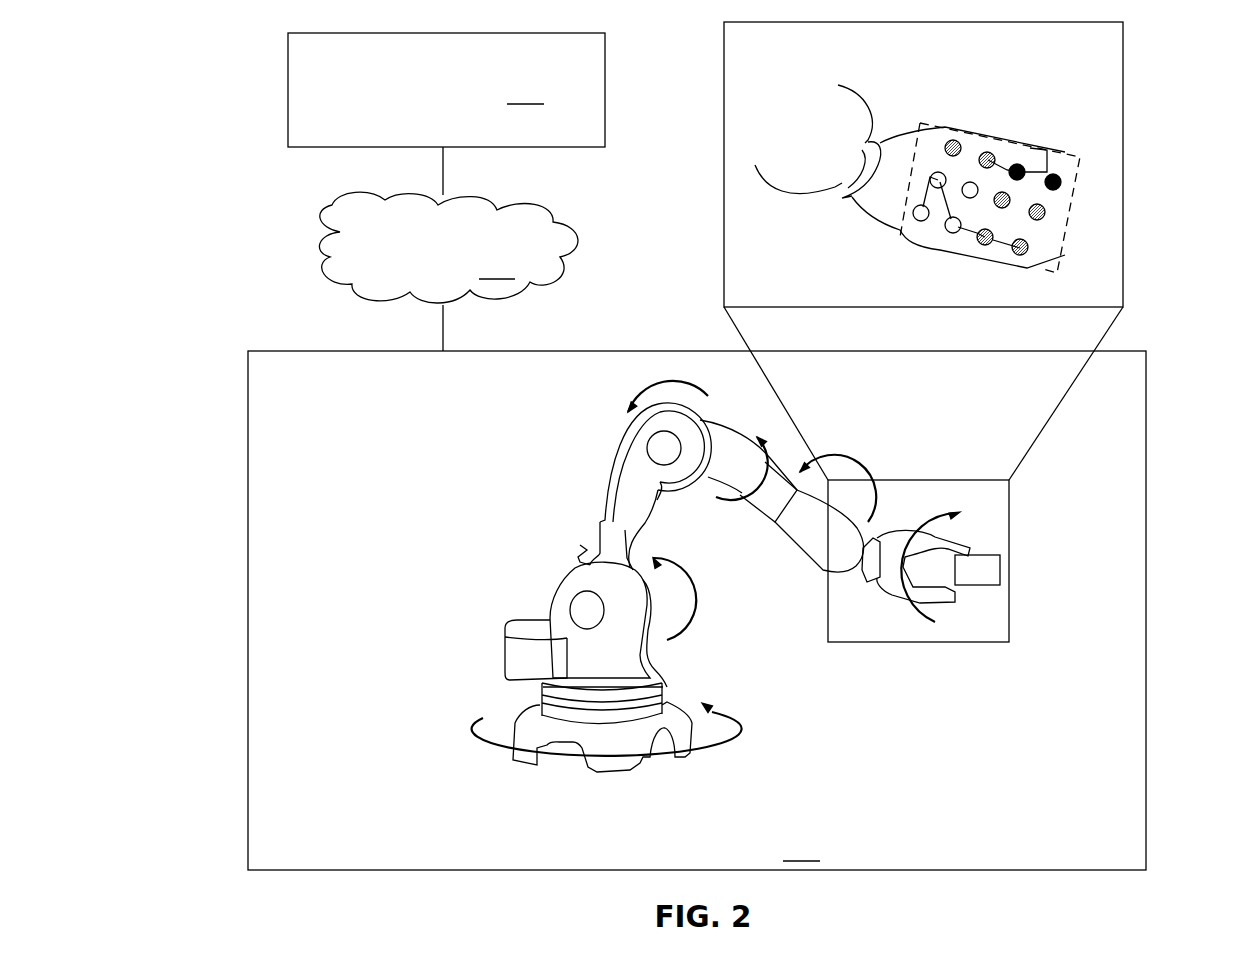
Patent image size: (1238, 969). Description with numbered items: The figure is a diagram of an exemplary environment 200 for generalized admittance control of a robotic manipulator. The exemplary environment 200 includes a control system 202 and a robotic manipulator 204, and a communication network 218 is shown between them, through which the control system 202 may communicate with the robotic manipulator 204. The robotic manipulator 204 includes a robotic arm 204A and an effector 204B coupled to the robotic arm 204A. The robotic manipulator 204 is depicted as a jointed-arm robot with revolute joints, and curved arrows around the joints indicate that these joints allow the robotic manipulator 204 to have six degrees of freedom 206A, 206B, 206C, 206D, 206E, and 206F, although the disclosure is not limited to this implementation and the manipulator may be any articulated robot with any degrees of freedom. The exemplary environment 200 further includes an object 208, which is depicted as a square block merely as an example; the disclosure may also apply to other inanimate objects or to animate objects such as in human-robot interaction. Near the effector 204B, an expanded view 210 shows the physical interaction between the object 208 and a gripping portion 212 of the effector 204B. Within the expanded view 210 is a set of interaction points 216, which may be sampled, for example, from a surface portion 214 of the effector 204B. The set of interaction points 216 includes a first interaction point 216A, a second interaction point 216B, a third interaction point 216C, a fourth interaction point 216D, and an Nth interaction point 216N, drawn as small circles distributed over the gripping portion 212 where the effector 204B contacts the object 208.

The exemplary environment 200 is at (152, 57).
The control system 202 is at (446, 90).
The robotic manipulator 204 is at (697, 610).
The robotic arm 204A is at (617, 503).
The effector 204B is at (853, 567).
The degree of freedom 206A is at (468, 740).
The degree of freedom 206B is at (686, 606).
The degree of freedom 206C is at (640, 391).
The degree of freedom 206D is at (726, 500).
The degree of freedom 206E is at (840, 468).
The degree of freedom 206F is at (917, 628).
The object 208 is at (1000, 560).
The expanded view 210 is at (1123, 57).
The gripping portion 212 is at (1003, 145).
The surface portion 214 is at (932, 227).
The set of interaction points 216 is at (937, 247).
The first interaction point 216A is at (1061, 180).
The second interaction point 216B is at (1045, 211).
The third interaction point 216C is at (1053, 148).
The fourth interaction point 216D is at (922, 205).
The Nth interaction point 216N is at (1028, 249).
The communication network 218 is at (448, 247).